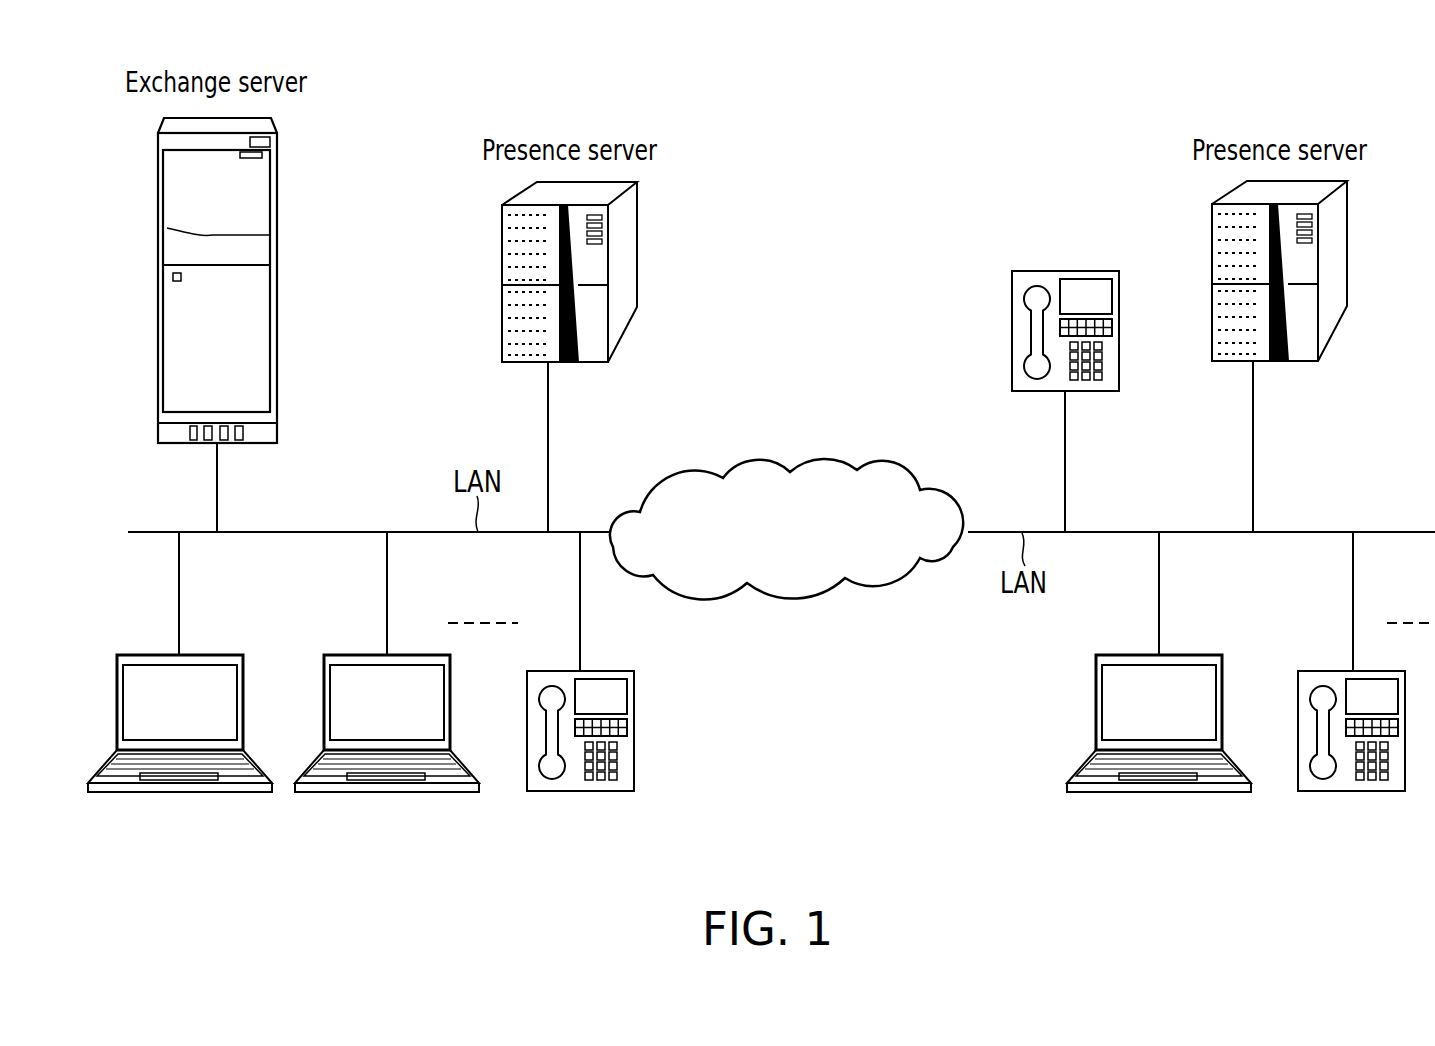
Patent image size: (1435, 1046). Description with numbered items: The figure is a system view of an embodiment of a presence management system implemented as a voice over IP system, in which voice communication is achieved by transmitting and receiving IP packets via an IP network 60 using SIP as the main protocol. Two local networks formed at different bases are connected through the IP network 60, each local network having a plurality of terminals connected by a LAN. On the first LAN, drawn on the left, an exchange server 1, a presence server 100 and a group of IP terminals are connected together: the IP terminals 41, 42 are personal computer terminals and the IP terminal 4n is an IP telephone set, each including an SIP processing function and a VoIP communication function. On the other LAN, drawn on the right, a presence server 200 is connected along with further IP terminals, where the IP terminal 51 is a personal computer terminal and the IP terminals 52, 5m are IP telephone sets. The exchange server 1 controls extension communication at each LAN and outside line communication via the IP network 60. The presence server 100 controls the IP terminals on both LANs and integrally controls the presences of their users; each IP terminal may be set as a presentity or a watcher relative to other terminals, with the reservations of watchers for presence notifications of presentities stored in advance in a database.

The exchange server 1 is at (277, 258).
The presence server 100 is at (597, 362).
The presence server 200 is at (1305, 362).
The IP terminal 5m is at (1098, 391).
The IP network 60 is at (793, 598).
The IP terminal 41 is at (200, 792).
The IP terminal 42 is at (408, 792).
The IP terminal 4n is at (598, 792).
The IP terminal 51 is at (1182, 792).
The IP terminal 52 is at (1370, 792).